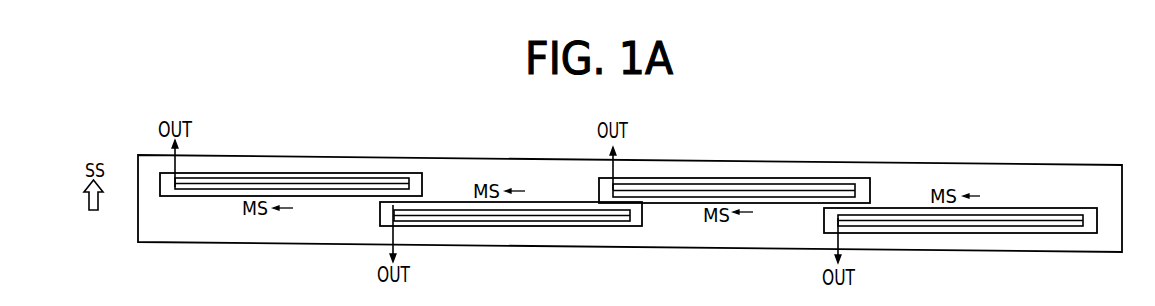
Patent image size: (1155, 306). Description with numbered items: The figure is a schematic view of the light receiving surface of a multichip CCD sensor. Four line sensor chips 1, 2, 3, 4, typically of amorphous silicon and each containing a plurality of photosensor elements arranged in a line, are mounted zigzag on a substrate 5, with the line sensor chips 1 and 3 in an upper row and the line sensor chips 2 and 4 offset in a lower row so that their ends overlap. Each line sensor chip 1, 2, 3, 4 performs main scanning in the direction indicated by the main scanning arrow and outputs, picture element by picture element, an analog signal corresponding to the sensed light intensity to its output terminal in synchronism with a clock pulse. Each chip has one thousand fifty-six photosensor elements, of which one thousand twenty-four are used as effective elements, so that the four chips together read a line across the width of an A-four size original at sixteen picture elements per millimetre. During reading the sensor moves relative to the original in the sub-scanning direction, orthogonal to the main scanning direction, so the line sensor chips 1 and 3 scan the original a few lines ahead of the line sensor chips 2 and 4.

The line sensor chip 1 is at (401, 174).
The line sensor chip 2 is at (432, 226).
The line sensor chip 3 is at (653, 178).
The line sensor chip 4 is at (899, 233).
The substrate 5 is at (943, 163).